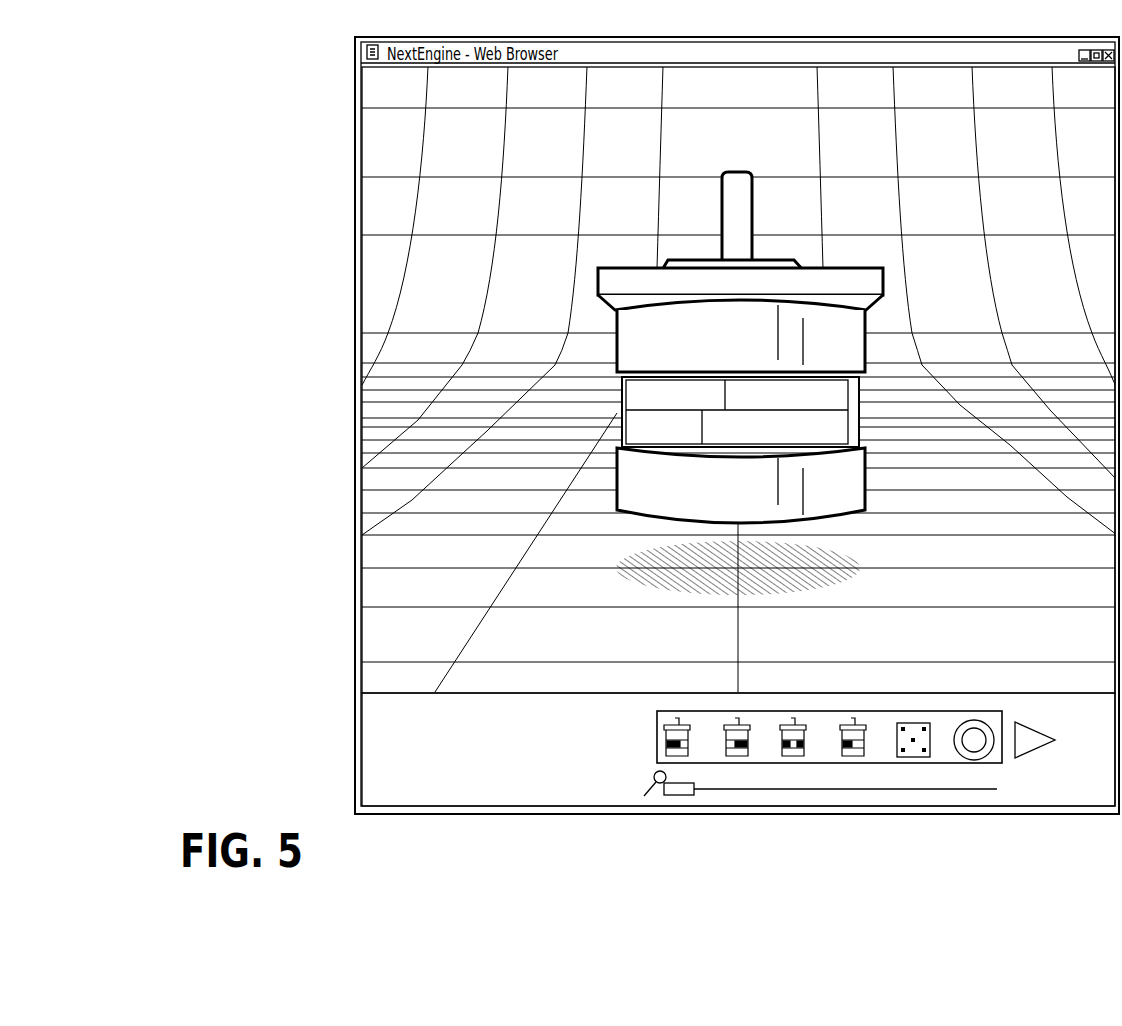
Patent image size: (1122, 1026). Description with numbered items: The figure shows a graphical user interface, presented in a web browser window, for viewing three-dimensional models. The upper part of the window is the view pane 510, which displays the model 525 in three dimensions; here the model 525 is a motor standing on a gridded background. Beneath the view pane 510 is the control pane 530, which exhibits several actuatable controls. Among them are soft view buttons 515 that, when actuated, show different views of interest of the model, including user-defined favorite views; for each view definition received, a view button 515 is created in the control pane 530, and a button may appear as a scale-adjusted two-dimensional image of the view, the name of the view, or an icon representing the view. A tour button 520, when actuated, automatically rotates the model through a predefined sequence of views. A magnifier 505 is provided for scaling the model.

The magnifier 505 is at (847, 791).
The view pane 510 is at (407, 688).
The view buttons 515 is at (690, 712).
The tour button 520 is at (1035, 722).
The model 525 is at (884, 276).
The control pane 530 is at (406, 788).